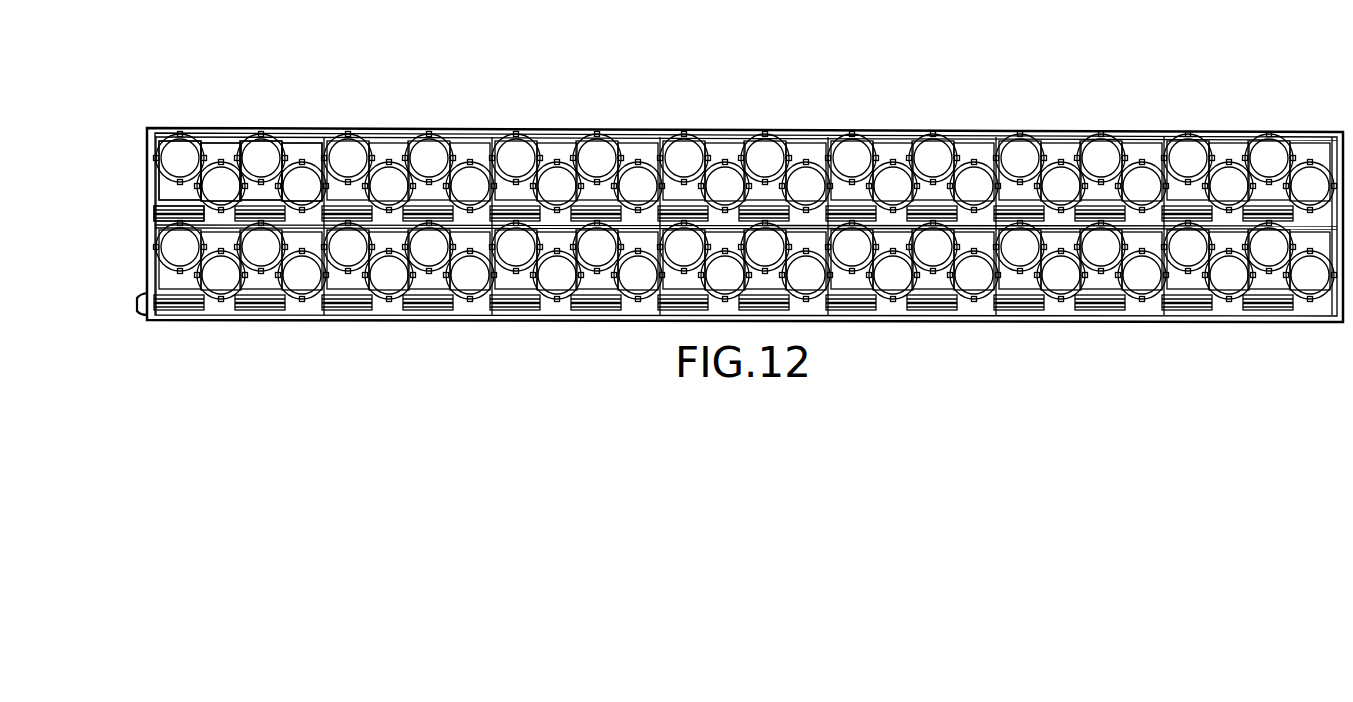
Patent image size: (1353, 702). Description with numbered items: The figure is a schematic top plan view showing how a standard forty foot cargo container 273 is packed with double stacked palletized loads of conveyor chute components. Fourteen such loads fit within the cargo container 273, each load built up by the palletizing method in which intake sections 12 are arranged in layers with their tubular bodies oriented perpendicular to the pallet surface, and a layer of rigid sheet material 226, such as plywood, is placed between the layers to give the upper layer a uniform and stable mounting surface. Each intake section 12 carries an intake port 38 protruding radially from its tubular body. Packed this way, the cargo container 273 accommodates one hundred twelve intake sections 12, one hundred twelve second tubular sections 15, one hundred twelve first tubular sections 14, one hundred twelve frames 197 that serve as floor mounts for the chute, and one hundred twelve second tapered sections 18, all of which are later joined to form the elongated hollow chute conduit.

The intake section 12 is at (149, 146).
The first tubular section 14 is at (175, 139).
The second tubular section 15 is at (157, 138).
The second tapered section 18 is at (158, 205).
The intake port 38 is at (180, 188).
The frame 197 is at (205, 147).
The rigid sheet material 226 is at (161, 182).
The cargo container 273 is at (130, 313).